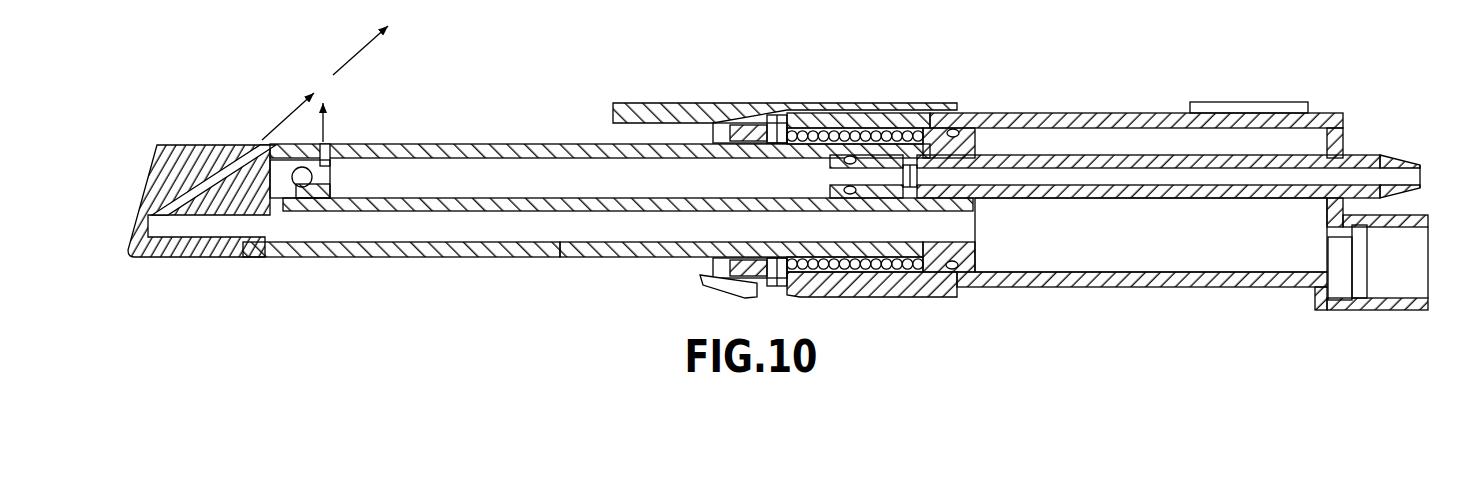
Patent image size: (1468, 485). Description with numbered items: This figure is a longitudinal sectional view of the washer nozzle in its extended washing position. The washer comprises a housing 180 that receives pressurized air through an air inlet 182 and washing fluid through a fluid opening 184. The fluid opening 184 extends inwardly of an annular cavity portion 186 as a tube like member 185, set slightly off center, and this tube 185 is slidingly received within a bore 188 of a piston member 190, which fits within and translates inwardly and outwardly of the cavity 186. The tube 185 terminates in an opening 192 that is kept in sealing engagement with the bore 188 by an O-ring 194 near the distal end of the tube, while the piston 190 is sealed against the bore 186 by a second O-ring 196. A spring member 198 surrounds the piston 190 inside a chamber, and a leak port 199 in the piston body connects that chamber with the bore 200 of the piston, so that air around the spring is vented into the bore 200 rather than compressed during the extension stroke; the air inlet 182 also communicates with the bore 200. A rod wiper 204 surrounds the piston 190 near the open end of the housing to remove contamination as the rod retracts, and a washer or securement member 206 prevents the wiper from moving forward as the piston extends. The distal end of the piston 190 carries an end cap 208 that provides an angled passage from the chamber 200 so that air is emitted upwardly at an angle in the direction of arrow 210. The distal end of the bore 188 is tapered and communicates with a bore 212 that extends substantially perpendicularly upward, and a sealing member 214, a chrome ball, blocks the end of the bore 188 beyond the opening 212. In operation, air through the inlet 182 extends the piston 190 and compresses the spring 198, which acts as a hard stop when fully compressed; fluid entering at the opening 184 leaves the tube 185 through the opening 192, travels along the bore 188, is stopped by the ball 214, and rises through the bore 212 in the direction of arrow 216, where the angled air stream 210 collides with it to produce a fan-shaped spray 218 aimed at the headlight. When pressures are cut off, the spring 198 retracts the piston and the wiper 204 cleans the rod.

The housing 180 is at (1248, 292).
The air inlet 182 is at (1420, 296).
The fluid opening 184 is at (1423, 177).
The tube like member 185 is at (1170, 157).
The annular cavity portion 186 is at (1087, 130).
The bore of piston member 188 is at (491, 154).
The piston member 190 is at (375, 258).
The opening of tube 192 is at (833, 173).
The O-ring 194 is at (848, 148).
The O-ring 196 is at (953, 130).
The spring member 198 is at (865, 268).
The leak port 199 is at (923, 243).
The bore of the piston 200 is at (483, 243).
The rod wiper 204 is at (763, 118).
The securement member 206 is at (664, 123).
The end cap 208 is at (147, 257).
The air stream arrow 210 is at (300, 112).
The bore 212 is at (340, 172).
The sealing member 214 is at (302, 188).
The fluid stream arrow 216 is at (327, 128).
The fan-shaped fluid spray 218 is at (358, 45).